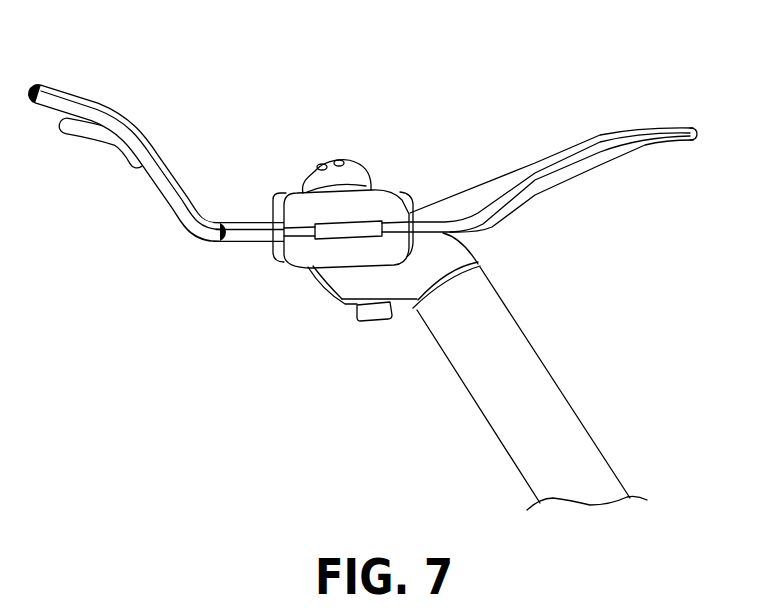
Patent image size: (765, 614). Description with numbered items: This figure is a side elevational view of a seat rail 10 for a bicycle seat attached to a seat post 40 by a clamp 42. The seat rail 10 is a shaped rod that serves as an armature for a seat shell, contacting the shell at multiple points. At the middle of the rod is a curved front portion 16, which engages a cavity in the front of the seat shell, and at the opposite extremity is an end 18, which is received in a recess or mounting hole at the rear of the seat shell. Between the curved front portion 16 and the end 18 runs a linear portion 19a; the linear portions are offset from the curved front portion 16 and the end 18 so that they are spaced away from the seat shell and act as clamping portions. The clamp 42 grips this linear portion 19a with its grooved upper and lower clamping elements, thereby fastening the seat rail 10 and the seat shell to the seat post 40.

The seat rail 10 is at (655, 110).
The curved front portion 16 is at (693, 133).
The end of seat rail 18 is at (85, 96).
The linear portion 19a is at (257, 241).
The seat post 40 is at (543, 395).
The clamp 42 is at (453, 255).